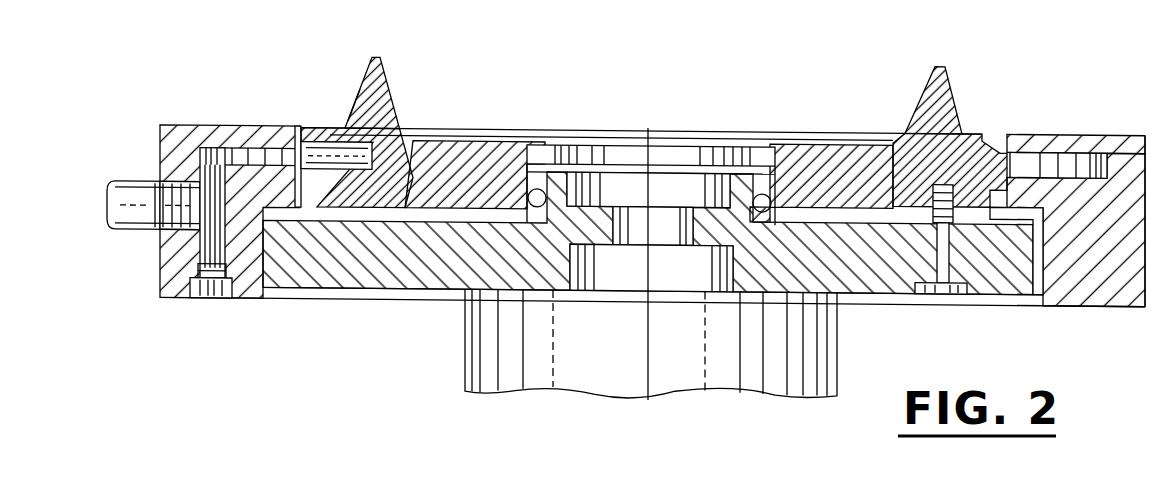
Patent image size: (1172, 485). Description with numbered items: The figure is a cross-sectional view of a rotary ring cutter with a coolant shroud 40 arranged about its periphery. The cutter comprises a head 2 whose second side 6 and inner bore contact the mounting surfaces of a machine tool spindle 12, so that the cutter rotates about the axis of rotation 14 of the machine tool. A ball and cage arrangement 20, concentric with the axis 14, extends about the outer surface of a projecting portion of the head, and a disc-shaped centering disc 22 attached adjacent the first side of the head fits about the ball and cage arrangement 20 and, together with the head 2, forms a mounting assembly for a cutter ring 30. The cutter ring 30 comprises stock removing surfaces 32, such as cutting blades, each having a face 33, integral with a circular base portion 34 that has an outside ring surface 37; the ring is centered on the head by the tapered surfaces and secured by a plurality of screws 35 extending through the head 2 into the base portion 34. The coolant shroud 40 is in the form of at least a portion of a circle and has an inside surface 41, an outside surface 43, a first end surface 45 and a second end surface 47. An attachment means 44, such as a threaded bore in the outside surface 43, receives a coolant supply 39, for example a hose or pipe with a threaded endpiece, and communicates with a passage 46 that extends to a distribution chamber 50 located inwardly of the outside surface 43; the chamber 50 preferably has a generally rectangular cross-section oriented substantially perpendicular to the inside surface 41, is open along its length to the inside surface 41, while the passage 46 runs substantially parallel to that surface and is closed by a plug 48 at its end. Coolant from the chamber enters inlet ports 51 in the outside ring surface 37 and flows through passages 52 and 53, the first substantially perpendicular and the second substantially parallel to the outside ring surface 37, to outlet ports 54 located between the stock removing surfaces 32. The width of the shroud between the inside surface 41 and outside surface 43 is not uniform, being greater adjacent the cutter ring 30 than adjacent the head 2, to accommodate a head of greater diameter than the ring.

The head 2 is at (358, 278).
The second side 6 is at (880, 296).
The machine tool spindle 12 is at (465, 362).
The axis of rotation 14 is at (652, 361).
The ball and cage arrangement 20 is at (760, 177).
The centering disc 22 is at (507, 134).
The cutter ring 30 is at (970, 116).
The stock removing surface 32 is at (376, 62).
The face 33 is at (384, 127).
The circular base portion 34 is at (920, 158).
The screws 35 is at (953, 291).
The outside ring surface 37 is at (993, 127).
The coolant supply 39 is at (140, 190).
The coolant shroud 40 is at (200, 130).
The inside surface 41 is at (1003, 125).
The outside surface 43 is at (1147, 290).
The attachment means 44 is at (158, 274).
The first end surface 45 is at (1119, 131).
The passage 46 is at (218, 152).
The second end surface 47 is at (178, 304).
The plug 48 is at (223, 304).
The distribution chamber 50 is at (250, 152).
The inlet ports 51 is at (298, 130).
The passage 52 is at (330, 145).
The passage 53 is at (505, 151).
The outlet ports 54 is at (397, 117).